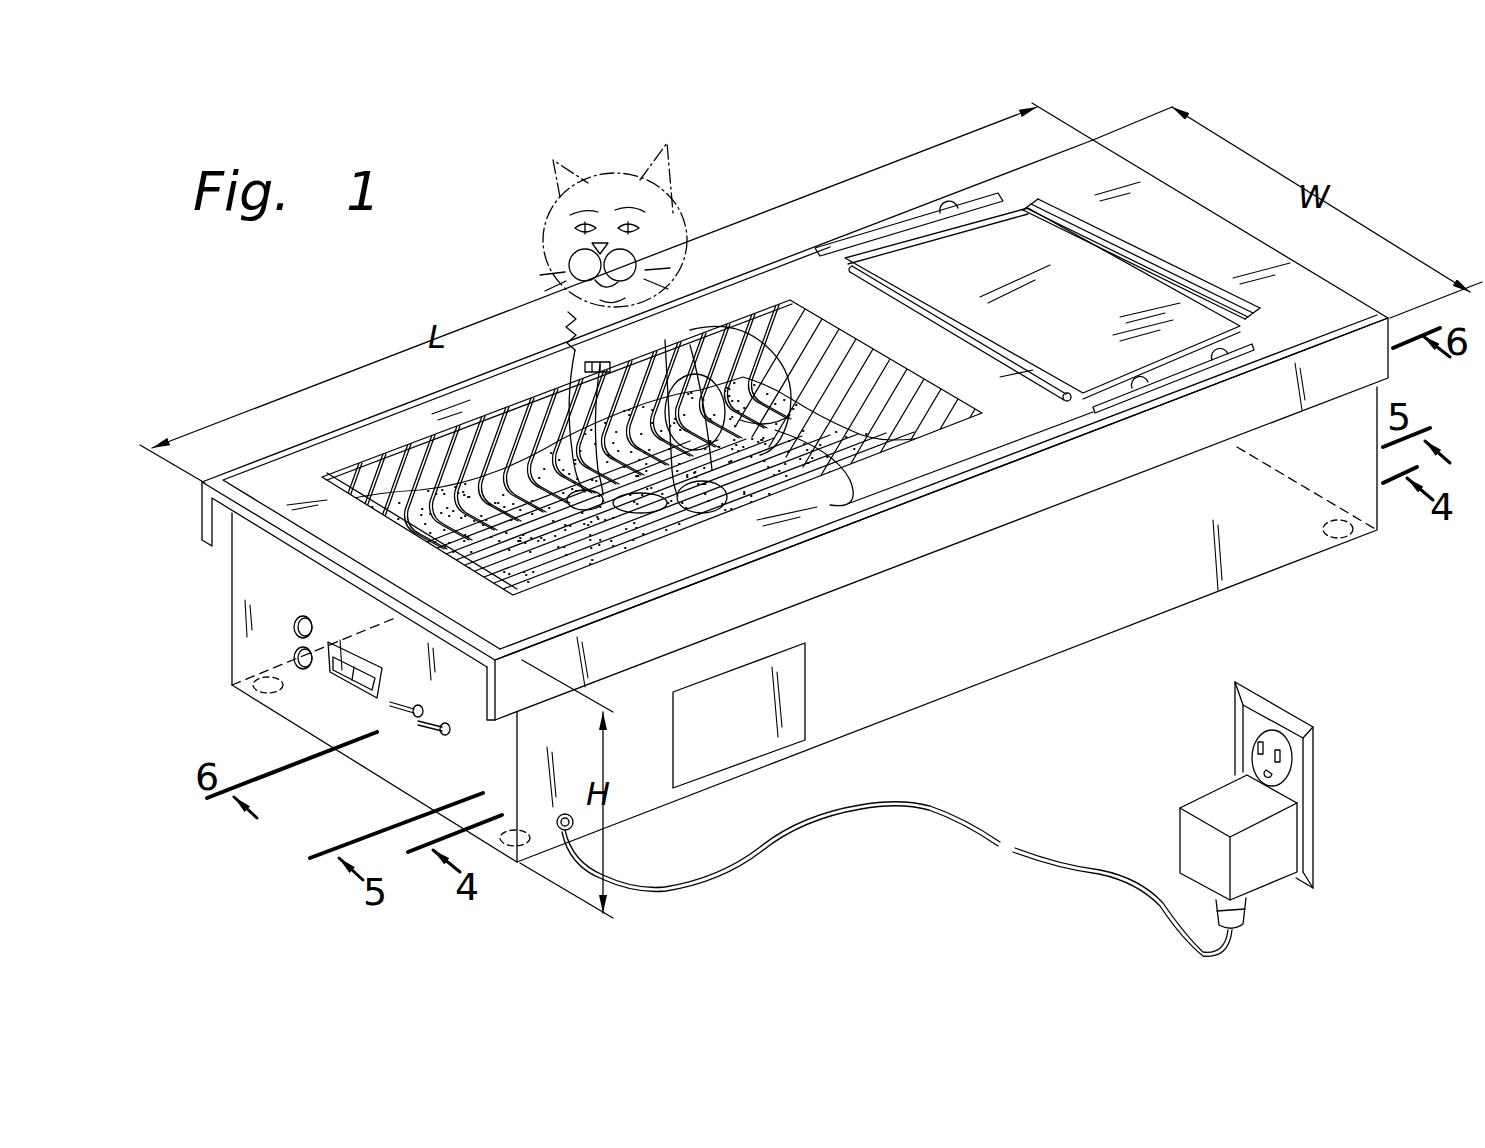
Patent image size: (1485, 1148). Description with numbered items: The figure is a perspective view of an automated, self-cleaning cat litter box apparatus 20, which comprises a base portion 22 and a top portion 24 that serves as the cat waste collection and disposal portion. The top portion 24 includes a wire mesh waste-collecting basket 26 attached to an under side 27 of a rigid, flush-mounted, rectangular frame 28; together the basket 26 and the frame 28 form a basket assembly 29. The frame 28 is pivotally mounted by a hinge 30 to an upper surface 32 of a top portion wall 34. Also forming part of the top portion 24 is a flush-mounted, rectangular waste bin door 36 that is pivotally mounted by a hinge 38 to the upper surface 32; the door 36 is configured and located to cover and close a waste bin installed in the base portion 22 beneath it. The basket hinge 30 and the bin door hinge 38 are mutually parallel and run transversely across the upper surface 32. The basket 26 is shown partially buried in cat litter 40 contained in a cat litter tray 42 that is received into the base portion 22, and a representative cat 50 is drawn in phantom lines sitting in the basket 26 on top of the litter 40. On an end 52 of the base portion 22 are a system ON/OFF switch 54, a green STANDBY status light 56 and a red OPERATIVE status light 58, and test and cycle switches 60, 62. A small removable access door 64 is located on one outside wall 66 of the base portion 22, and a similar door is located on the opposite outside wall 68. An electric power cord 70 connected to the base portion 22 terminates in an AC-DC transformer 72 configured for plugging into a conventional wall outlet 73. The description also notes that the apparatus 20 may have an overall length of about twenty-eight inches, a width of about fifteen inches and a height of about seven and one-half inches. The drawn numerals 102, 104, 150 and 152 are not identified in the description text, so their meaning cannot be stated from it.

The self-cleaning cat litter box apparatus 20 is at (1178, 628).
The base portion 22 is at (1305, 572).
The top portion 24 is at (1194, 173).
The waste-collecting basket 26 is at (474, 425).
The under side 27 is at (380, 468).
The frame 28 is at (1040, 434).
The basket assembly 29 is at (900, 505).
The hinge 30 is at (1010, 363).
The upper surface 32 is at (1312, 331).
The top portion wall 34 is at (307, 560).
The waste bin door 36 is at (923, 253).
The hinge 38 is at (1137, 248).
The cat litter 40 is at (466, 485).
The cat litter tray 42 is at (642, 483).
The cat 50 is at (682, 212).
The end 52 is at (487, 840).
The ON/OFF switch 54 is at (330, 668).
The STANDBY status light 56 is at (296, 627).
The OPERATIVE status light 58 is at (296, 658).
The test switch 60 is at (398, 714).
The cycle switch 62 is at (427, 733).
The access door 64 is at (745, 753).
The outside wall 66 is at (1033, 643).
The opposite outside wall 68 is at (232, 573).
The electric power cord 70 is at (910, 802).
The AC-DC transformer 72 is at (1202, 798).
The wall outlet 73 is at (1313, 790).
The cover rail 102 is at (968, 200).
The rail detent 104 is at (952, 215).
The floor slats 150 is at (670, 510).
The litter clumps 152 is at (745, 340).